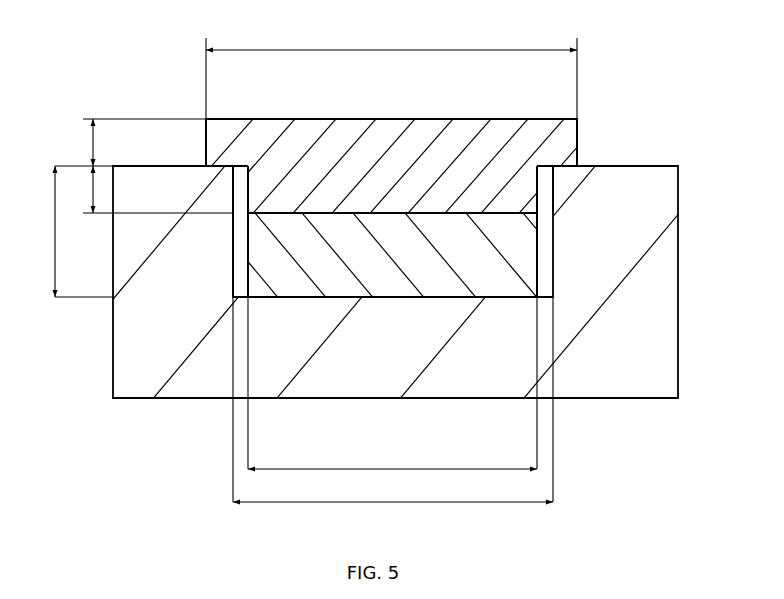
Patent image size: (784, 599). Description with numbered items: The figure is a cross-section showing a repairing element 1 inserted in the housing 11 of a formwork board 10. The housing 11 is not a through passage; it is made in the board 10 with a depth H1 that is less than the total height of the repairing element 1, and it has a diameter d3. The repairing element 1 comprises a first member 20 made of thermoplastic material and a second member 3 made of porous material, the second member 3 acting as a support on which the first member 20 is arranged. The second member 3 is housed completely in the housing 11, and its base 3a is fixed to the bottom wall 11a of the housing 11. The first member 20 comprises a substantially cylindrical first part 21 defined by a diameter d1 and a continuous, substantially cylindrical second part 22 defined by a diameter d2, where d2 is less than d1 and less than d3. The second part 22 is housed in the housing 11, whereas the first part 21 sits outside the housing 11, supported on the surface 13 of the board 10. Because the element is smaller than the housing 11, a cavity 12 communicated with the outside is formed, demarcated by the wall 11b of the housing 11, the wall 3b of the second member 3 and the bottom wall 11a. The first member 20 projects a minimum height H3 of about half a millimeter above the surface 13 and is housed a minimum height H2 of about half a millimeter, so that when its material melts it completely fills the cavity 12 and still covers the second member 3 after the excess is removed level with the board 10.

The repairing element 1 is at (273, 119).
The first member 20 is at (375, 142).
The first part 21 is at (217, 138).
The second part 22 is at (484, 197).
The second member 3 is at (355, 267).
The base 3a is at (378, 297).
The wall 3b is at (538, 289).
The formwork board 10 is at (617, 357).
The housing 11 is at (543, 270).
The bottom wall 11a is at (496, 297).
The wall 11b is at (233, 278).
The cavity 12 is at (546, 213).
The surface 13 is at (160, 165).
The diameter of first part d1 is at (391, 71).
The diameter of second part d2 is at (392, 384).
The diameter of housing d3 is at (393, 401).
The depth of housing H1 is at (67, 231).
The minimum housed height of first member H2 is at (146, 189).
The minimum projecting height H3 is at (132, 142).